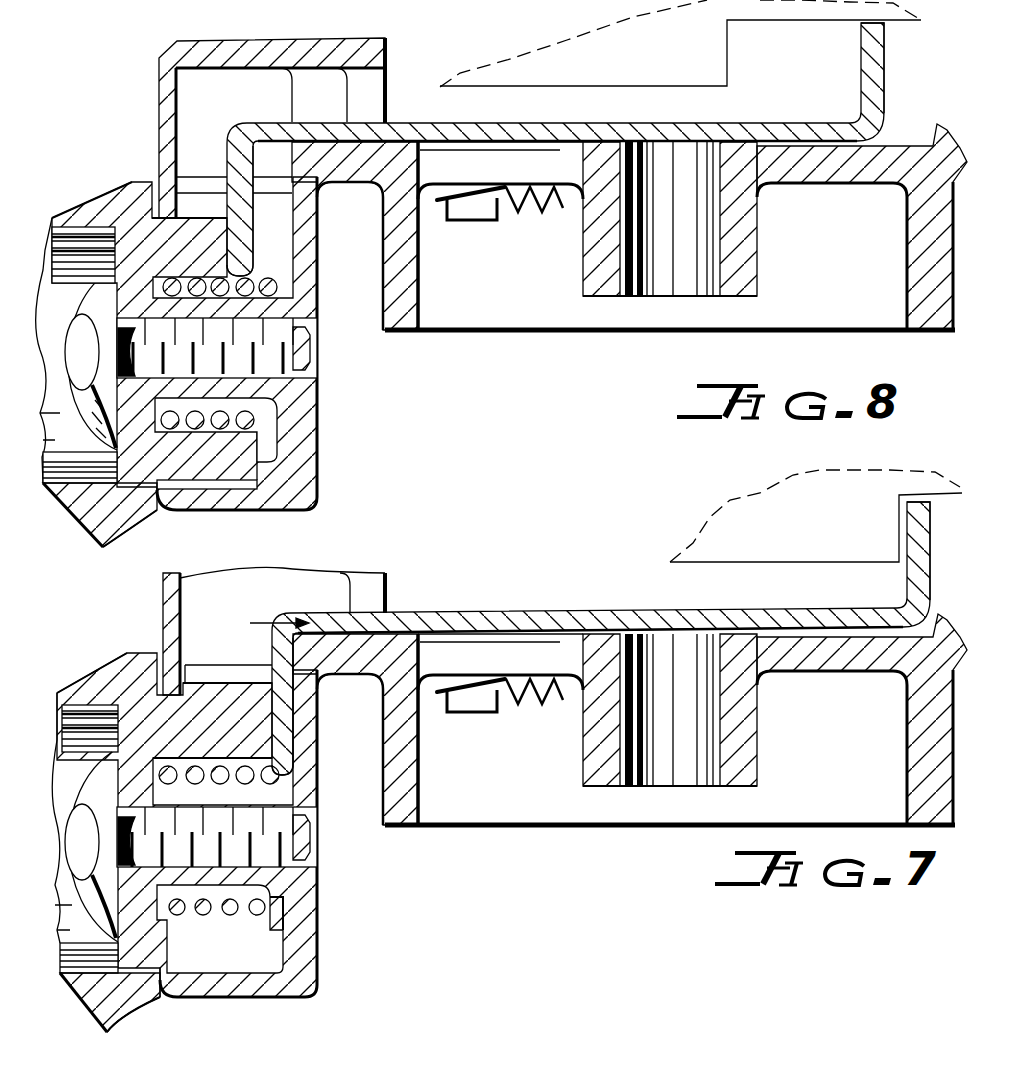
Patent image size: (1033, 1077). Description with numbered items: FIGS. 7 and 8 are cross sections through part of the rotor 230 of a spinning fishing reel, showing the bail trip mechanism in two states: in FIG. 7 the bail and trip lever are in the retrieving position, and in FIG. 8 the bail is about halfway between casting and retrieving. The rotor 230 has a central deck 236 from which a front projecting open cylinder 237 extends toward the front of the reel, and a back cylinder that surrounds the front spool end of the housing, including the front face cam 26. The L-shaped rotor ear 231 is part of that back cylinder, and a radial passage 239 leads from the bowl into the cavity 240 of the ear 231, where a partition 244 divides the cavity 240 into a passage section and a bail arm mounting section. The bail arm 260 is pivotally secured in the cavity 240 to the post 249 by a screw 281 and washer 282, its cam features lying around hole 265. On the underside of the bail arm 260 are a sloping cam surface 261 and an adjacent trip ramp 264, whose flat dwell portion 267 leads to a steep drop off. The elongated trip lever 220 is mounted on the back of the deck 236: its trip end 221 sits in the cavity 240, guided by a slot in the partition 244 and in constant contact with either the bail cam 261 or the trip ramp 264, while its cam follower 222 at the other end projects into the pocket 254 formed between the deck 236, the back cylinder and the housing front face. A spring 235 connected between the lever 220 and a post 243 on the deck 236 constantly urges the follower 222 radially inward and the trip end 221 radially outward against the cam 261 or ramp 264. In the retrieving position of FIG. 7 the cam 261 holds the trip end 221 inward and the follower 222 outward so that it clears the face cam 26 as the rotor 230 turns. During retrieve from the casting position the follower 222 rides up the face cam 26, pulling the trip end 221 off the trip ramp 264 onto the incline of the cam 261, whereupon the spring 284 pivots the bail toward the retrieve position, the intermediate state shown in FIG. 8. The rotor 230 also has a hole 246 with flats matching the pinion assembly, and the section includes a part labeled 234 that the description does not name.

In FIG. 8, the front face cam 26 is at (703, 58).
In FIG. 7, the front face cam 26 is at (823, 550).
In FIG. 8, the trip lever 220 is at (487, 130).
In FIG. 7, the trip lever 220 is at (565, 612).
In FIG. 8, the trip end 221 is at (240, 252).
In FIG. 7, the trip end 221 is at (300, 735).
In FIG. 8, the cam follower 222 is at (882, 58).
In FIG. 7, the cam follower 222 is at (923, 553).
In FIG. 8, the rotor 230 is at (930, 315).
In FIG. 7, the rotor 230 is at (937, 805).
In FIG. 8, the rotor ear 231 is at (305, 458).
In FIG. 8, the end wall 234 is at (159, 99).
In FIG. 7, the end wall 234 is at (163, 605).
In FIG. 8, the spring 235 is at (560, 208).
In FIG. 7, the spring 235 is at (562, 690).
In FIG. 8, the central deck 236 is at (850, 170).
In FIG. 7, the central deck 236 is at (851, 660).
In FIG. 8, the front projecting open cylinder 237 is at (397, 326).
In FIG. 7, the front projecting open cylinder 237 is at (408, 820).
In FIG. 8, the radial passage 239 is at (380, 88).
In FIG. 7, the radial passage 239 is at (383, 593).
In FIG. 8, the cavity 240 is at (244, 109).
In FIG. 7, the cavity 240 is at (243, 616).
In FIG. 8, the post 243 is at (449, 220).
In FIG. 7, the post 243 is at (472, 710).
In FIG. 8, the partition 244 is at (193, 185).
In FIG. 7, the partition 244 is at (258, 674).
In FIG. 8, the hole 246 is at (684, 255).
In FIG. 7, the hole 246 is at (685, 745).
In FIG. 8, the post 249 is at (220, 299).
In FIG. 8, the pocket 254 is at (828, 68).
In FIG. 7, the pocket 254 is at (700, 590).
In FIG. 7, the bail arm 260 is at (110, 690).
In FIG. 8, the cam surface 261 is at (224, 205).
In FIG. 7, the cam surface 261 is at (250, 731).
In FIG. 7, the trip ramp 264 is at (167, 947).
In FIG. 8, the hole 265 is at (90, 235).
In FIG. 7, the flat dwell portion 267 is at (167, 967).
In FIG. 8, the screw 281 is at (67, 343).
In FIG. 8, the washer 282 is at (103, 432).
In FIG. 8, the spring 284 is at (274, 433).
In FIG. 7, the spring 284 is at (267, 923).